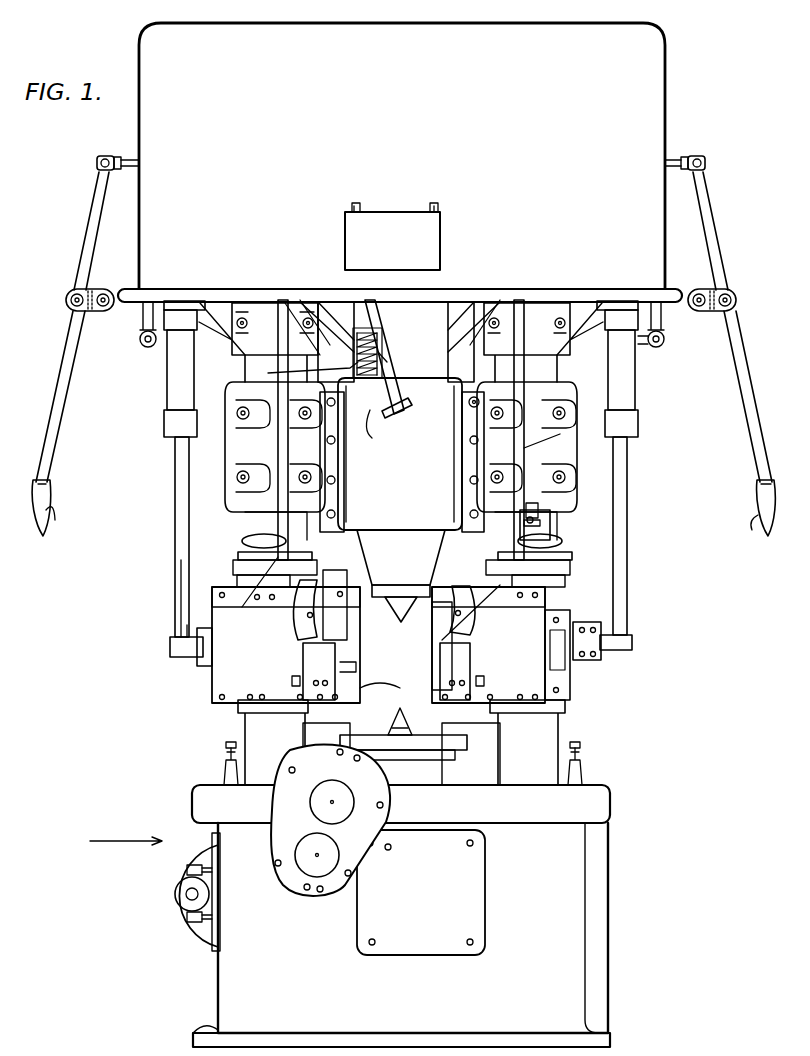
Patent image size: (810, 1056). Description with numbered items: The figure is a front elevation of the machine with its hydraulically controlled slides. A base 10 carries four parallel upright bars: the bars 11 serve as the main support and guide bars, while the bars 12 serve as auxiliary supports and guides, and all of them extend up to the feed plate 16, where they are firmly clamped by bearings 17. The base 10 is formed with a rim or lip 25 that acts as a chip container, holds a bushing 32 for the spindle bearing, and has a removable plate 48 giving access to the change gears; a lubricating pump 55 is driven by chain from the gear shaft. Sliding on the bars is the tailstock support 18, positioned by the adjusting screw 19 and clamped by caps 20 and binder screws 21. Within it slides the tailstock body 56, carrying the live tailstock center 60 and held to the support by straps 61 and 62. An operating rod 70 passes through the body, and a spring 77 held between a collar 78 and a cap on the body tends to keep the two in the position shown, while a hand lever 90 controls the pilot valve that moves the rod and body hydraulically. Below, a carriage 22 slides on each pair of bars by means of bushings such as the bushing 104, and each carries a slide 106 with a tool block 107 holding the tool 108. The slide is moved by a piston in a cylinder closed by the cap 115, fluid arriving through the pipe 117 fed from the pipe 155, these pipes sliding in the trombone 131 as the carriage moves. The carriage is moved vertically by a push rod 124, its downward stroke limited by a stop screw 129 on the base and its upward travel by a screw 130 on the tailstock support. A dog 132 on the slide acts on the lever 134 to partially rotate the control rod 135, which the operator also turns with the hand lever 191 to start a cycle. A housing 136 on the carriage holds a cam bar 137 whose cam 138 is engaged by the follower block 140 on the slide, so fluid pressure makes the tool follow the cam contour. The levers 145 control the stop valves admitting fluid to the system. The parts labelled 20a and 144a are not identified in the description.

The base 10 is at (401, 935).
The main support and guide bars 11 is at (604, 722).
The auxiliary support and guide bars 12 is at (478, 378).
The feed plate 16 is at (537, 293).
The bearings 17 is at (240, 345).
The tailstock support 18 is at (236, 442).
The adjusting screw 19 is at (305, 367).
The caps 20 is at (262, 403).
The center 20a is at (396, 715).
The binder screws 21 is at (238, 417).
The carriage 22 is at (232, 574).
The rim or lip 25 is at (401, 804).
The bushing 32 is at (438, 760).
The removable plate 48 is at (330, 820).
The lubricating pump 55 is at (176, 893).
The tailstock body 56 is at (384, 530).
The live tailstock center 60 is at (400, 618).
The strap 61 is at (470, 404).
The strap 62 is at (336, 480).
The operating rod 70 is at (384, 358).
The spring 77 is at (405, 352).
The collar 78 is at (380, 338).
The hand lever 90 is at (392, 420).
The bushing 104 is at (356, 667).
The slide 106 is at (380, 670).
The tool block 107 is at (312, 668).
The tool 108 is at (393, 690).
The cap 115 is at (180, 657).
The pipe 117 is at (175, 499).
The push rod 124 is at (315, 322).
The adjustable stop screw 129 is at (226, 740).
The adjustable screw 130 is at (545, 528).
The trombone 131 is at (167, 380).
The dog 132 is at (320, 600).
The lever 134 is at (364, 610).
The control rod 135 is at (278, 456).
The housing 136 is at (518, 618).
The cam bar 137 is at (545, 555).
The cam 138 is at (561, 433).
The follower block 140 is at (560, 668).
The pivot 144a is at (125, 158).
The lever 145 is at (758, 385).
The pipe 155 is at (401, 319).
The hand lever 191 is at (245, 543).